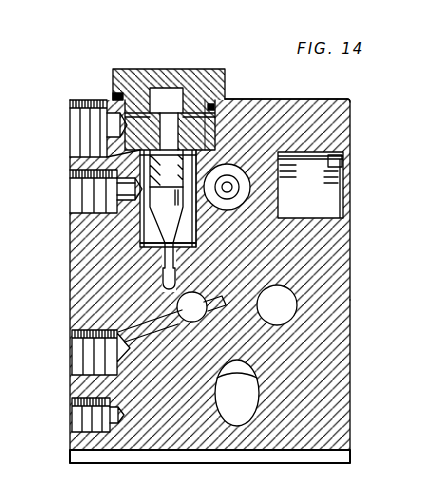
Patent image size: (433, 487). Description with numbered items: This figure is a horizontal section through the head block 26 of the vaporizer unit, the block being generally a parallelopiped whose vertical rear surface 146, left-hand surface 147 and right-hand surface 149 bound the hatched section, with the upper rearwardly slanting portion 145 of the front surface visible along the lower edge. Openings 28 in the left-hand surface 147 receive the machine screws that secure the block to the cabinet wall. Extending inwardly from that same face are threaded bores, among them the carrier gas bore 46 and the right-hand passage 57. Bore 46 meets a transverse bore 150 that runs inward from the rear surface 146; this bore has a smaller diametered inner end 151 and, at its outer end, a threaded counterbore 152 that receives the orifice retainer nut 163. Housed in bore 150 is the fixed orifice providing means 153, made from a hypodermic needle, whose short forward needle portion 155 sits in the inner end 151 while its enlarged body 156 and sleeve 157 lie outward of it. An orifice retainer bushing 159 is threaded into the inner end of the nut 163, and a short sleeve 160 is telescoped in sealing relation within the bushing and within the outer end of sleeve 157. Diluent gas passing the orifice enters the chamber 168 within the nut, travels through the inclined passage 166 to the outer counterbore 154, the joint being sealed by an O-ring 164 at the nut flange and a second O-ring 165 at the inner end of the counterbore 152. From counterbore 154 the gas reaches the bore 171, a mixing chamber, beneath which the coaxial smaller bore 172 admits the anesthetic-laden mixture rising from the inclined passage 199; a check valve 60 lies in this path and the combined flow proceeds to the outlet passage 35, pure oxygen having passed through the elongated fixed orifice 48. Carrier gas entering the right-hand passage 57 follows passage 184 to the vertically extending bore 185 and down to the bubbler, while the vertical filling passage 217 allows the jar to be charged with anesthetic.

The head block 26 is at (303, 98).
The openings 28 is at (68, 108).
The outlet passage 35 is at (343, 164).
The threaded bore 46 is at (70, 172).
The fixed orifice 48 is at (135, 205).
The right-hand passage 57 is at (72, 340).
The check valve 60 is at (265, 172).
The upper rearwardly slanting portion 145 is at (333, 463).
The vertical rear surface 146 is at (335, 98).
The left-hand surface 147 is at (70, 283).
The right-hand surface 149 is at (350, 375).
The bore 150 is at (143, 242).
The smaller diametered inner end 151 is at (163, 275).
The threaded counterbore 152 is at (238, 104).
The fixed orifice providing means 153 is at (117, 189).
The outer counterbore 154 is at (214, 103).
The forward needle portion 155 is at (147, 244).
The enlarged body 156 is at (135, 222).
The sleeve 157 is at (140, 162).
The orifice retainer bushing 159 is at (217, 103).
The short sleeve 160 is at (166, 215).
The orifice retainer nut 163 is at (158, 84).
The O-ring 164 is at (112, 95).
The second O-ring 165 is at (205, 140).
The inclined passage 166 is at (199, 98).
The chamber 168 is at (161, 96).
The bore 171 is at (224, 212).
The smaller bore 172 is at (240, 188).
The passage 184 is at (148, 334).
The vertically extending bore 185 is at (201, 313).
The inclined passage 199 is at (263, 394).
The vertical filling passage 217 is at (295, 309).